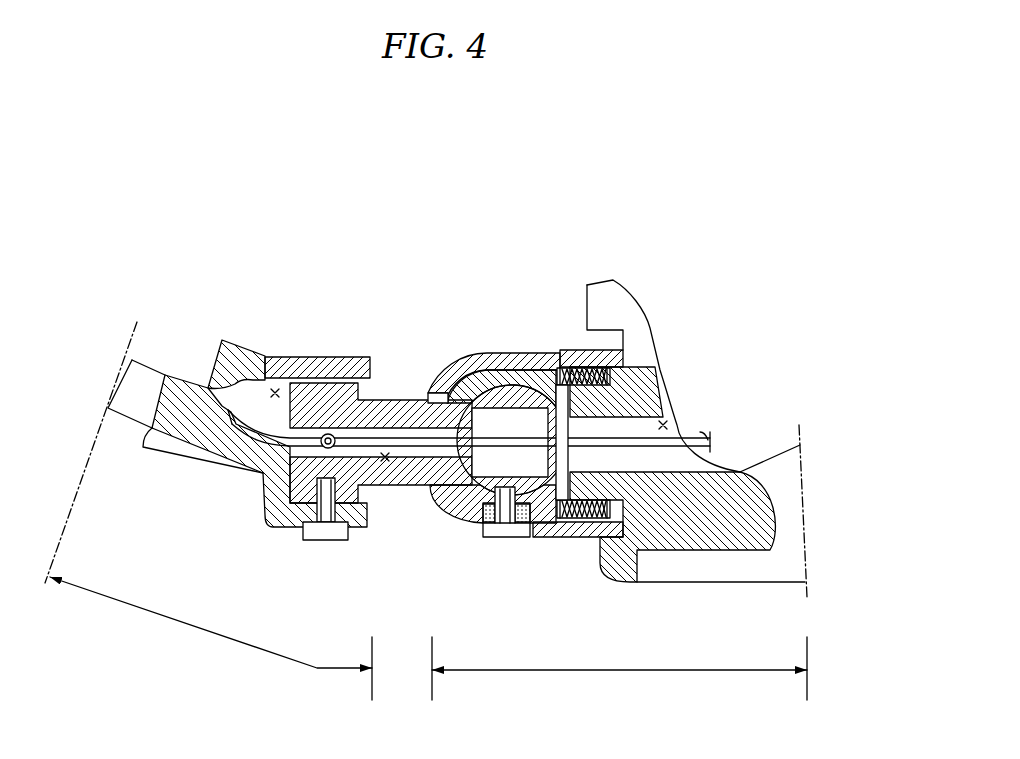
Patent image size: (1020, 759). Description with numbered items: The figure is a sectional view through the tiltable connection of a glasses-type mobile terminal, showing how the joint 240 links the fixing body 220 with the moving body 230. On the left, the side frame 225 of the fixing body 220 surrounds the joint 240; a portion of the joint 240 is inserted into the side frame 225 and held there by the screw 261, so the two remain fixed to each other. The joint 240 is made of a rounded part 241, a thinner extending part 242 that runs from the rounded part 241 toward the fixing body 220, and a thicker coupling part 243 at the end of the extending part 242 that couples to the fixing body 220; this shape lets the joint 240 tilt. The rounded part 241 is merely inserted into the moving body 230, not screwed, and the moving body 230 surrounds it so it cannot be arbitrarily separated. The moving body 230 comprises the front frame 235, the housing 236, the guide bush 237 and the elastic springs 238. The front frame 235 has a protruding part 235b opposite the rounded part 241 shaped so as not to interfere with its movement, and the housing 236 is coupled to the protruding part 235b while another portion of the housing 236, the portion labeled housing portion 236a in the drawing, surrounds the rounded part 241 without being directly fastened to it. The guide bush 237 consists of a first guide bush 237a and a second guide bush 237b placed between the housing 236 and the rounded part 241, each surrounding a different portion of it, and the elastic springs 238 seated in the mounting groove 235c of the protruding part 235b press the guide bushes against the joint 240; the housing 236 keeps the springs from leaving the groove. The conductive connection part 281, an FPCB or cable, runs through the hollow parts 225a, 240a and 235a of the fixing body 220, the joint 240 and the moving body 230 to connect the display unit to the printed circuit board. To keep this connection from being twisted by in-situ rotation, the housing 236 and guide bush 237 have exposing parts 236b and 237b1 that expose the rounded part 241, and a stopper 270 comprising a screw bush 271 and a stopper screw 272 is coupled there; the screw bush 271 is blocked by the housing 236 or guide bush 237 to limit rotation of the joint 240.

The fixing body 220 is at (211, 638).
The side frame 225 is at (182, 427).
The hollow part 225a is at (275, 388).
The moving body 230 is at (619, 668).
The front frame 235 is at (705, 525).
The hollow part 235a is at (664, 424).
The protruding part 235b is at (622, 355).
The mounting groove 235c is at (627, 540).
The housing 236 is at (497, 352).
The ball 236a is at (432, 487).
The exposing part 236b is at (533, 530).
The guide bush 237 is at (630, 211).
The first guide bush 237a is at (538, 367).
The second guide bush 237b is at (580, 363).
The exposing part 237b1 is at (566, 533).
The elastic spring 238 is at (627, 490).
The joint 240 is at (470, 243).
The hollow part 240a is at (381, 490).
The rounded part 241 is at (487, 386).
The extending part 242 is at (408, 400).
The coupling part 243 is at (330, 387).
The screw 261 is at (329, 541).
The stopper 270 is at (467, 586).
The screw bush 271 is at (488, 505).
The stopper screw 272 is at (528, 520).
The conductive connection part 281 is at (700, 433).